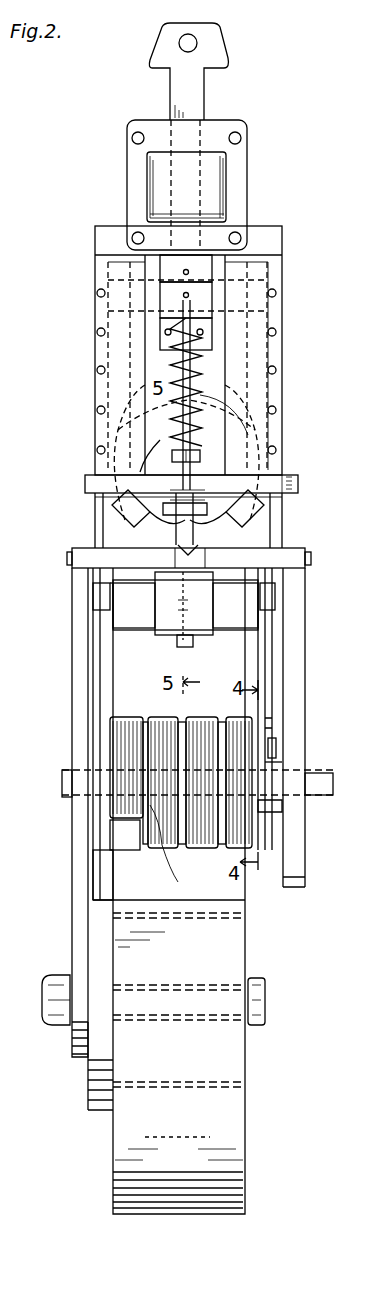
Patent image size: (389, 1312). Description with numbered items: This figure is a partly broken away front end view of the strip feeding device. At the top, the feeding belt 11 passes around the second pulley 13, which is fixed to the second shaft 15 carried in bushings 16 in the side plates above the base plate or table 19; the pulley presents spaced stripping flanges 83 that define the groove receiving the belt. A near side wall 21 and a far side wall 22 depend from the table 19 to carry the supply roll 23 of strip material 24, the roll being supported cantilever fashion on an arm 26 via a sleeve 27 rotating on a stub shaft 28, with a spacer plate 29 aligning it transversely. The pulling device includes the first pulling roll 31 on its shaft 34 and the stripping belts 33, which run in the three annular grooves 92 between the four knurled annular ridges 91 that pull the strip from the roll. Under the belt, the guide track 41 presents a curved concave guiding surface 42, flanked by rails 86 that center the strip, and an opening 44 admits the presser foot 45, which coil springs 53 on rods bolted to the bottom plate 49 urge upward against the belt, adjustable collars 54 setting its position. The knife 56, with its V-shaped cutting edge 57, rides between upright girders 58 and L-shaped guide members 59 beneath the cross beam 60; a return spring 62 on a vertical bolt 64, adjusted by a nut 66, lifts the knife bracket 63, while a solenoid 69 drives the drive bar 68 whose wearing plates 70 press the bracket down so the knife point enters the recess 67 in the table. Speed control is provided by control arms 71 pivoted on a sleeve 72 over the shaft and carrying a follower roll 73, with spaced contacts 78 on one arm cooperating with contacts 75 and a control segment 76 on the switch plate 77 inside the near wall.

The feeding belt 11 is at (195, 520).
The second pulley 13 is at (235, 605).
The second shaft 15 is at (292, 490).
The bushings 16 is at (95, 472).
The base plate or table 19 is at (130, 578).
The near side wall 21 is at (295, 665).
The far side wall 22 is at (78, 676).
The supply roll 23 is at (245, 1120).
The strip material 24 is at (198, 962).
The arm 26 is at (80, 940).
The sleeve 27 is at (210, 985).
The stub shaft 28 is at (265, 1003).
The spacer plate 29 is at (98, 1082).
The first pulling roll 31 is at (104, 850).
The stripping belts 33 is at (222, 748).
The shaft 34 is at (322, 790).
The guide track 41 is at (246, 515).
The curved concave guiding surface 42 is at (130, 515).
The opening 44 is at (214, 559).
The presser foot 45 is at (134, 605).
The bottom plate 49 is at (193, 640).
The coil springs 53 is at (184, 606).
The adjustable collars 54 is at (200, 612).
The knife 56 is at (228, 452).
The V-shaped cutting edge 57 is at (140, 470).
The upright girders 58 is at (237, 300).
The L-shaped guide members 59 is at (257, 395).
The cross beam 60 is at (272, 243).
The return spring 62 is at (150, 392).
The knife bracket 63 is at (172, 318).
The vertical bolt 64 is at (178, 372).
The nut 66 is at (200, 458).
The cutout or recess 67 is at (72, 570).
The drive bar 68 is at (185, 258).
The solenoid 69 is at (215, 172).
The wearing plates 70 is at (235, 258).
The control arms 71 is at (265, 645).
The sleeve 72 is at (72, 762).
The follower roll 73 is at (240, 612).
The contacts 75 is at (276, 750).
The control segment 76 is at (288, 768).
The switch plate 77 is at (278, 818).
The spaced contacts 78 is at (268, 745).
The stripping flanges 83 is at (178, 517).
The rails 86 is at (105, 497).
The annular ridges 91 is at (125, 797).
The annular grooves 92 is at (146, 716).